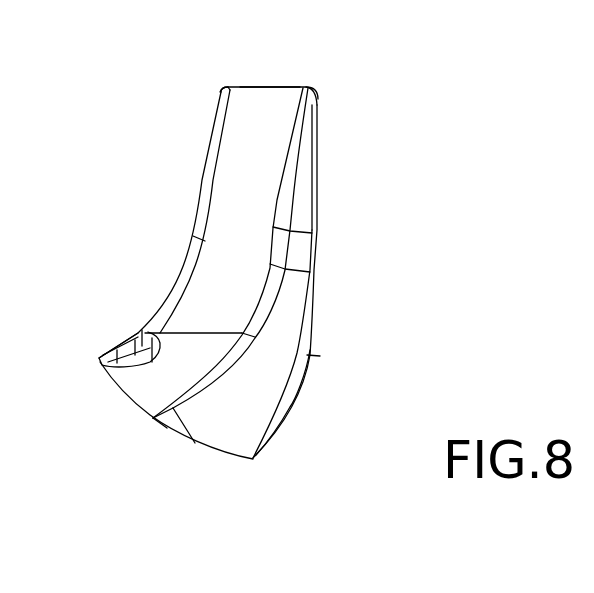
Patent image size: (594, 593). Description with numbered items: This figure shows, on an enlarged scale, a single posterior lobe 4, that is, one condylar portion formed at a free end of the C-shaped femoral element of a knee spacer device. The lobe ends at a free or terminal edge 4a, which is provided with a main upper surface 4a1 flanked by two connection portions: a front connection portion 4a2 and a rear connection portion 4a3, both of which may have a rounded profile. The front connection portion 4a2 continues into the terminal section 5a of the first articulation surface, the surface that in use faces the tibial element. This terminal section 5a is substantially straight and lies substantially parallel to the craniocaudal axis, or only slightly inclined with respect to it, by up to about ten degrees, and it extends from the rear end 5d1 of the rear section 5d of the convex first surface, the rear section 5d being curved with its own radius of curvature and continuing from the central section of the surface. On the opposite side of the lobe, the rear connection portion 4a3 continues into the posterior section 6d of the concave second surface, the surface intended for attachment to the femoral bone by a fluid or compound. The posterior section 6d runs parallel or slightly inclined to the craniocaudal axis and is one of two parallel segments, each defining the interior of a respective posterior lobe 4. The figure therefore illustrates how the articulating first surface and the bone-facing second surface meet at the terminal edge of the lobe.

The posterior lobe 4 is at (227, 287).
The terminal edge 4a is at (258, 110).
The main upper surface 4a1 is at (246, 87).
The front connection portion 4a2 is at (310, 88).
The rear connection portion 4a3 is at (220, 87).
The posterior section 6d is at (198, 200).
The terminal section 5a is at (313, 232).
The rear end 5d1 is at (307, 355).
The rear section 5d is at (258, 452).